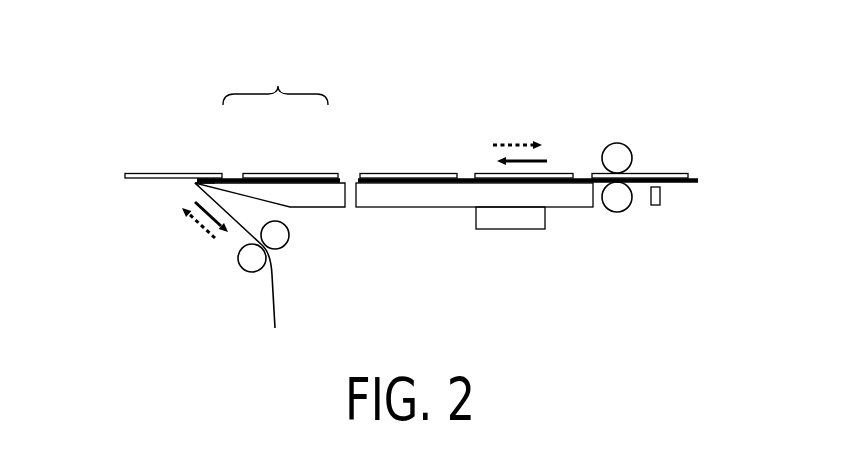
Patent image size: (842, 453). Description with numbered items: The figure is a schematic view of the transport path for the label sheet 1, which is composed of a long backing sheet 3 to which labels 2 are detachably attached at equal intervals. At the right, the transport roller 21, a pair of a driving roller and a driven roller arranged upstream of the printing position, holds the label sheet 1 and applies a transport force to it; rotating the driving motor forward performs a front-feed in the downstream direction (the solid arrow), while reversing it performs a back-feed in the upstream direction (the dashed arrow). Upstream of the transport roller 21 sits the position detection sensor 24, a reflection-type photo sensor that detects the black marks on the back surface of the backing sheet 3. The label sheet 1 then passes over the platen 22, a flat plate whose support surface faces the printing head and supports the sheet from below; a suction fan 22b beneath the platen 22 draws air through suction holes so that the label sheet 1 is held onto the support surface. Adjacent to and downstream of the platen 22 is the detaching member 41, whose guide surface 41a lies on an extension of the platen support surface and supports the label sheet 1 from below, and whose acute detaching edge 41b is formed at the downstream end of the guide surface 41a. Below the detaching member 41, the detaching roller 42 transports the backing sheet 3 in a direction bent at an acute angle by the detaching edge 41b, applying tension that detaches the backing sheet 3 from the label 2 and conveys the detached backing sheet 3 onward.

The label sheet 1 is at (275, 83).
The label 2 is at (265, 175).
The backing sheet 3 is at (350, 178).
The transport roller 21 is at (629, 134).
The platen 22 is at (450, 198).
The suction fan 22b is at (540, 223).
The position detection sensor 24 is at (660, 195).
The detaching member 41 is at (302, 193).
The guide surface 41a is at (233, 175).
The detaching edge 41b is at (197, 174).
The detaching roller 42 is at (226, 253).